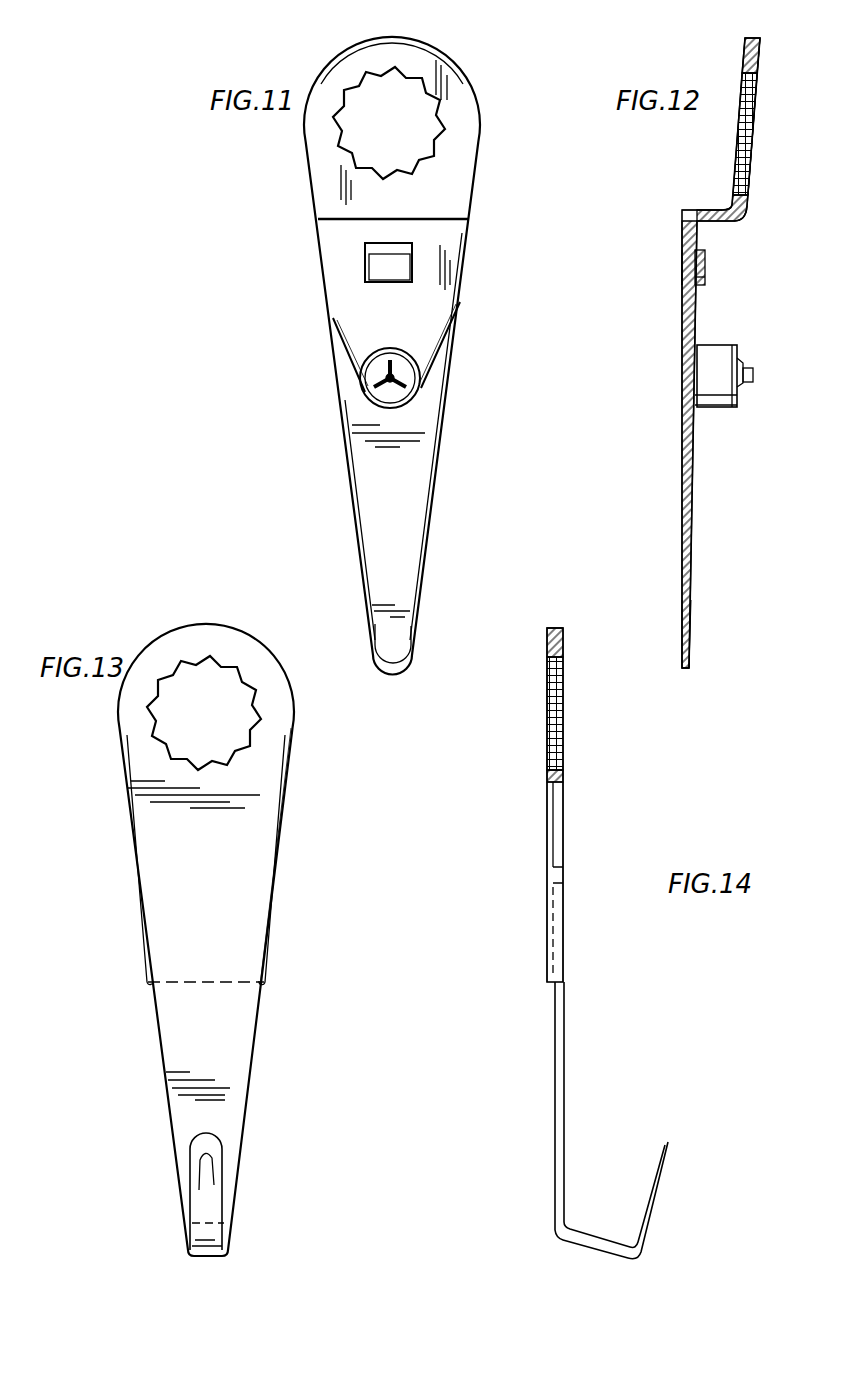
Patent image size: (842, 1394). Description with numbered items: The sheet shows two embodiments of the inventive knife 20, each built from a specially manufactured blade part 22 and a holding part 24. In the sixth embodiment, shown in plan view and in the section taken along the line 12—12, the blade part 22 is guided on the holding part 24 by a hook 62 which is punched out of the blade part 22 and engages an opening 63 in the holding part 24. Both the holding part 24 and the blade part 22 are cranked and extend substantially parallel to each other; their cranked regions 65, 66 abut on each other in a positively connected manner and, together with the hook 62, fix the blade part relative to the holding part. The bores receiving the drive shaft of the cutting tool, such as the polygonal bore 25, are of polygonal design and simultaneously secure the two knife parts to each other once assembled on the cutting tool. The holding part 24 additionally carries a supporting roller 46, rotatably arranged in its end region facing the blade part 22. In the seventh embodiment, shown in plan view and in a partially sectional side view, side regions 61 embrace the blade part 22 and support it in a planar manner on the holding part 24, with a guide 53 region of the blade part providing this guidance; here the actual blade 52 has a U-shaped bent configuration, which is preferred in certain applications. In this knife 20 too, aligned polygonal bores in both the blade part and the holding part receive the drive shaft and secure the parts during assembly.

In FIG. 11, the section line 12- 12 is at (410, 16).
In FIG. 11, the knife 20 is at (364, 379).
In FIG. 12, the knife 20 is at (692, 372).
In FIG. 13, the knife 20 is at (245, 940).
In FIG. 14, the knife 20 is at (621, 943).
In FIG. 11, the blade part 22 is at (436, 528).
In FIG. 12, the blade part 22 is at (708, 593).
In FIG. 13, the blade part 22 is at (250, 1045).
In FIG. 14, the blade part 22 is at (568, 838).
In FIG. 11, the holding part 24 is at (468, 254).
In FIG. 12, the holding part 24 is at (756, 197).
In FIG. 13, the holding part 24 is at (290, 868).
In FIG. 14, the holding part 24 is at (570, 887).
In FIG. 11, the polygonal bore 25 is at (364, 78).
In FIG. 12, the polygonal bore 25 is at (746, 77).
In FIG. 13, the polygonal bore 25 is at (176, 678).
In FIG. 14, the polygonal bore 25 is at (547, 674).
In FIG. 11, the supporting roller 46 is at (418, 392).
In FIG. 12, the supporting roller 46 is at (738, 406).
In FIG. 11, the blade 52 is at (399, 678).
In FIG. 12, the blade 52 is at (688, 655).
In FIG. 13, the blade 52 is at (193, 1146).
In FIG. 14, the blade 52 is at (668, 1155).
In FIG. 13, the guide 53 is at (150, 958).
In FIG. 14, the guide 53 is at (570, 932).
In FIG. 13, the side regions 61 is at (138, 934).
In FIG. 14, the side regions 61 is at (565, 953).
In FIG. 11, the hook 62 is at (389, 274).
In FIG. 12, the hook 62 is at (705, 278).
In FIG. 11, the opening 63 is at (366, 263).
In FIG. 12, the opening 63 is at (683, 263).
In FIG. 12, the cranked region 65 is at (728, 210).
In FIG. 11, the cranked region 66 is at (340, 222).
In FIG. 12, the cranked region 66 is at (740, 221).